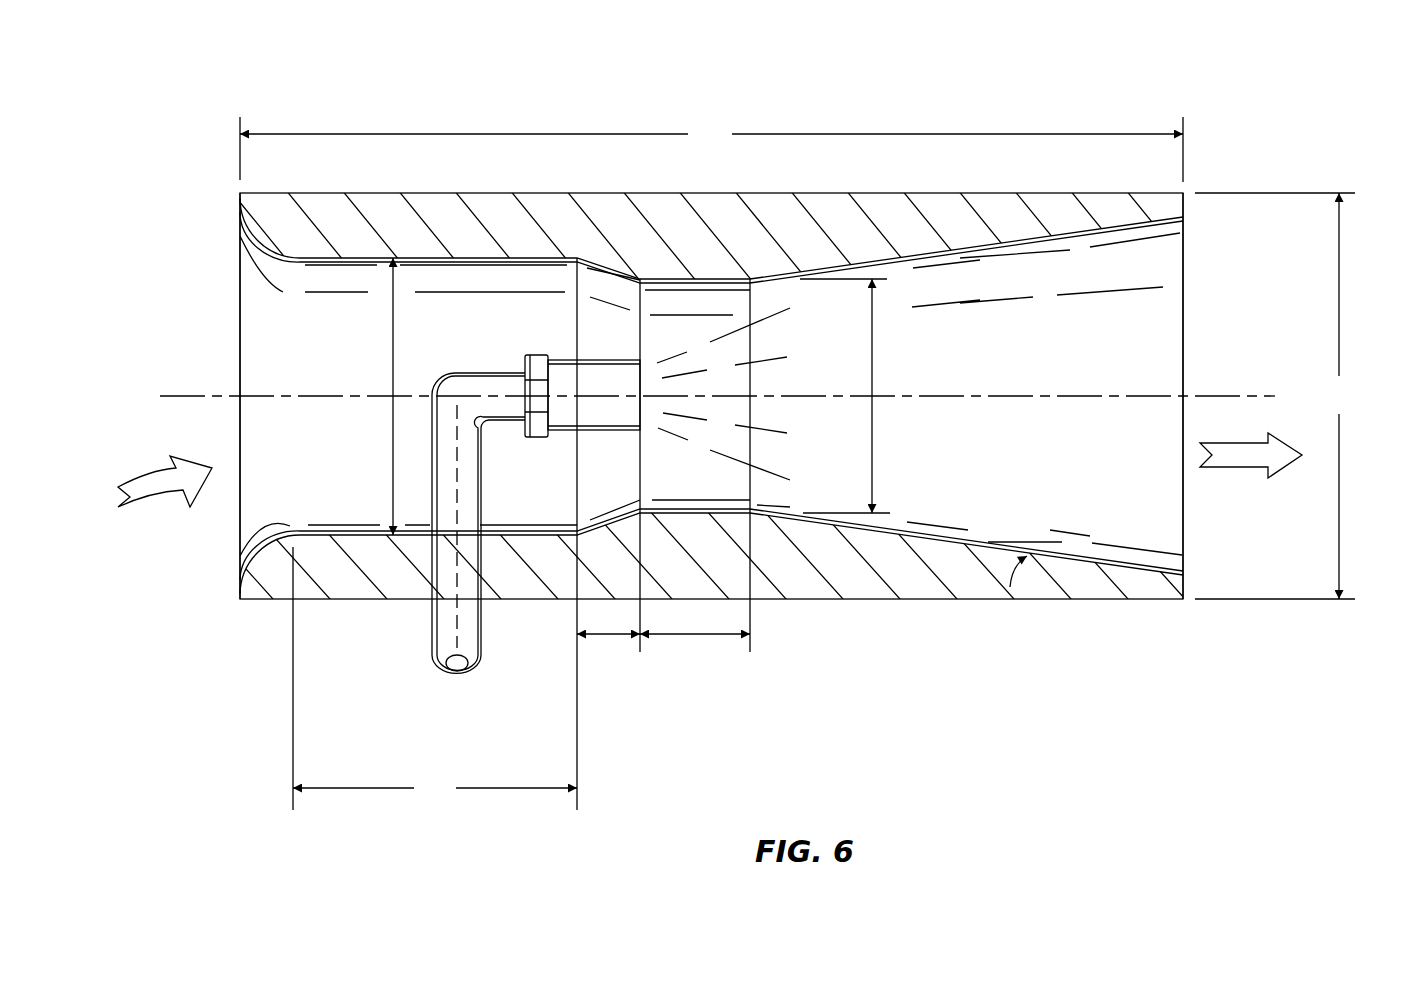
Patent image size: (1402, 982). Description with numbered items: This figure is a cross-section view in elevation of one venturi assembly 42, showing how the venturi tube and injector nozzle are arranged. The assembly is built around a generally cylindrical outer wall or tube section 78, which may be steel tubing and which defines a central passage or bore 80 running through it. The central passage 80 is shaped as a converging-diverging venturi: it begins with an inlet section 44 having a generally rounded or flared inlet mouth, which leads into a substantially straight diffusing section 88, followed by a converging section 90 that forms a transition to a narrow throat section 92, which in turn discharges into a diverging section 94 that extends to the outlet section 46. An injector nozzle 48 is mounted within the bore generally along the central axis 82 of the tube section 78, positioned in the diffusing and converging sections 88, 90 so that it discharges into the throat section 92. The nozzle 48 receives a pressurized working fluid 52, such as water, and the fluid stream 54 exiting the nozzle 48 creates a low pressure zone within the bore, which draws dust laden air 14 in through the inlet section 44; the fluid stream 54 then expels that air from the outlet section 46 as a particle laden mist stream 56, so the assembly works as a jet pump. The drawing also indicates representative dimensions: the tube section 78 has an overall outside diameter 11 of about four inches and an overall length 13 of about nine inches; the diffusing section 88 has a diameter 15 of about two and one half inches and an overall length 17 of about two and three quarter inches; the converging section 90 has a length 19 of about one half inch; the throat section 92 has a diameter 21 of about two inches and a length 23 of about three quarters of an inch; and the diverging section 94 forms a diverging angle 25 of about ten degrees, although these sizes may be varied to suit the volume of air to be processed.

The venturi assembly 42 is at (266, 70).
The overall length 13 is at (711, 149).
The tube section 78 is at (818, 193).
The inlet section 44 is at (240, 262).
The outlet section 46 is at (1183, 266).
The central passage 80 is at (270, 317).
The diameter 15 is at (393, 330).
The fluid stream 54 is at (770, 358).
The diameter 21 is at (876, 345).
The central axis 82 is at (1240, 396).
The overall outside diameter 11 is at (1275, 396).
The diffusing section 88 is at (316, 478).
The injector nozzle 48 is at (566, 432).
The converging section 90 is at (596, 484).
The throat section 92 is at (670, 487).
The diverging section 94 is at (956, 453).
The diverging angle 25 is at (1028, 541).
The particle laden mist stream 56 is at (1236, 470).
The dust laden air 14 is at (152, 505).
The pressurized working fluid 52 is at (458, 695).
The length 19 is at (612, 640).
The length 23 is at (700, 640).
The overall length 17 is at (435, 678).